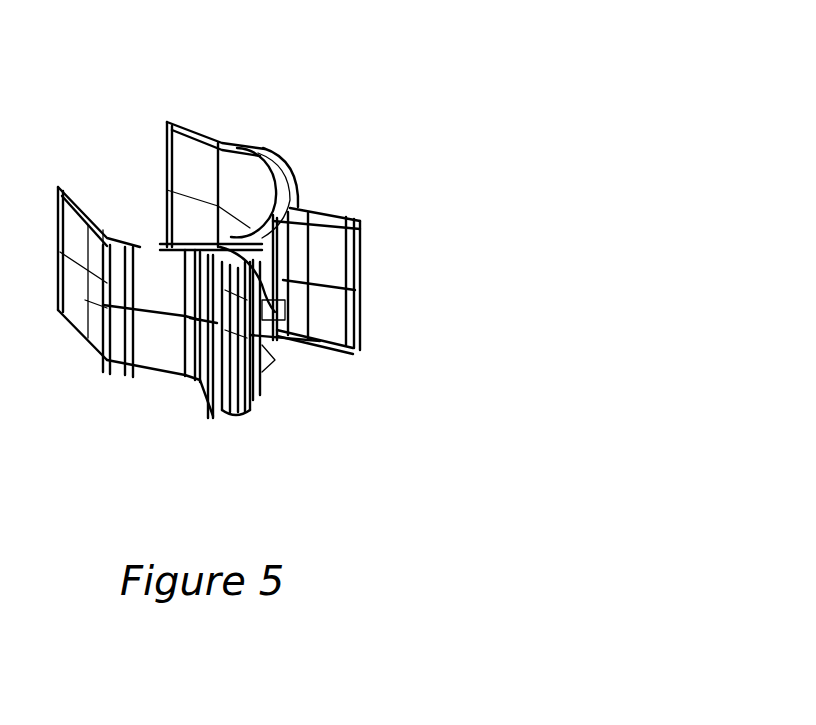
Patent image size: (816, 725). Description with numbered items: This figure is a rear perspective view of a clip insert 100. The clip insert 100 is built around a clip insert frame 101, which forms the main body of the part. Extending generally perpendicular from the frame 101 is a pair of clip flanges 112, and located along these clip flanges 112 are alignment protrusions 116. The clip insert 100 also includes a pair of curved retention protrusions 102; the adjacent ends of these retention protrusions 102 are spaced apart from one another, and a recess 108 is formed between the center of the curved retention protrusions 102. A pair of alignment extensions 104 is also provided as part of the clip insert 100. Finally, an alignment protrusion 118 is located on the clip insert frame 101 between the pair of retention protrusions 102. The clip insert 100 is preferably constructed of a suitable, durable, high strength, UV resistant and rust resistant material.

The clip insert 100 is at (358, 90).
The clip insert frame 101 is at (310, 163).
The retention protrusions 102 is at (303, 317).
The alignment extensions 104 is at (367, 307).
The recess 108 is at (283, 300).
The clip flanges 112 is at (233, 143).
The alignment protrusions 116 is at (112, 363).
The alignment protrusion 118 is at (272, 360).